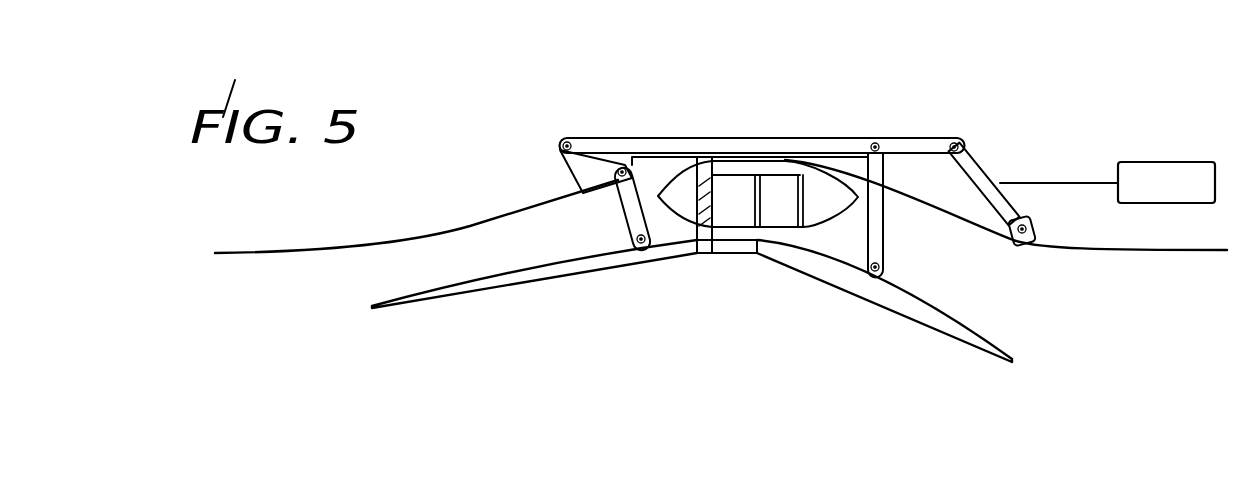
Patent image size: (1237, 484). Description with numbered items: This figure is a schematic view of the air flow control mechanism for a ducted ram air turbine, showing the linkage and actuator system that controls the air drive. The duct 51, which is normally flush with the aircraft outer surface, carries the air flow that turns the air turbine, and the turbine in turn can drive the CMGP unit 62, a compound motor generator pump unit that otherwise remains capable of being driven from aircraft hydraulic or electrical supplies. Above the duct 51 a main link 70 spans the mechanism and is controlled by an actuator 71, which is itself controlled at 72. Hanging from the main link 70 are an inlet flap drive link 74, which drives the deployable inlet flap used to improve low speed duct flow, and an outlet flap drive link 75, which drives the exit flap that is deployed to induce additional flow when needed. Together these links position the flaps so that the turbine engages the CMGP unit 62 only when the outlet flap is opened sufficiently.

The duct 51 is at (457, 252).
The CMGP unit 62 is at (770, 176).
The main link 70 is at (647, 136).
The actuator 71 is at (984, 168).
The actuator control 72 is at (1158, 185).
The inlet flap drive link 74 is at (624, 222).
The outlet flap drive link 75 is at (886, 230).